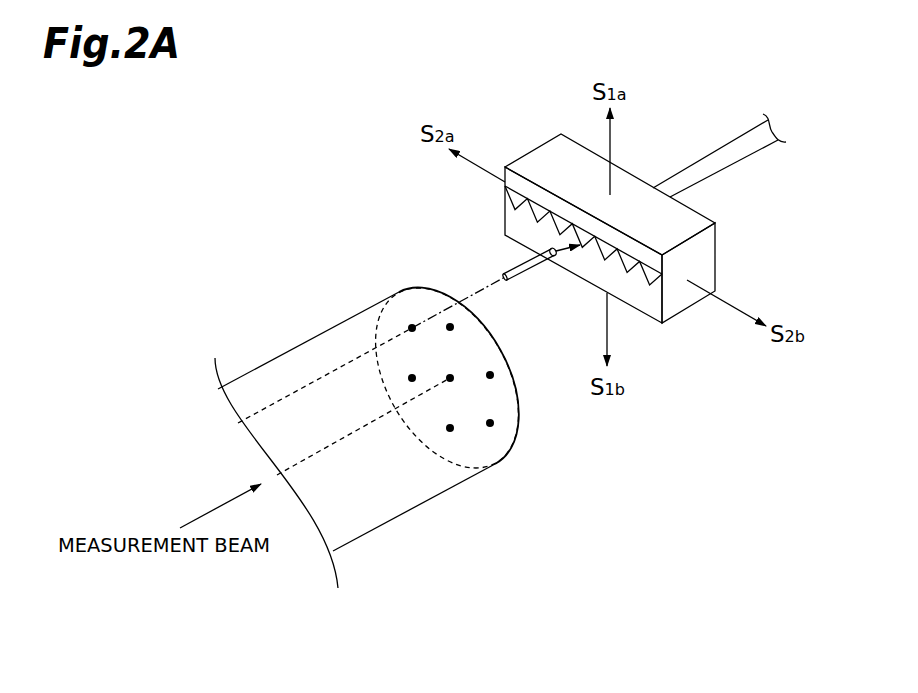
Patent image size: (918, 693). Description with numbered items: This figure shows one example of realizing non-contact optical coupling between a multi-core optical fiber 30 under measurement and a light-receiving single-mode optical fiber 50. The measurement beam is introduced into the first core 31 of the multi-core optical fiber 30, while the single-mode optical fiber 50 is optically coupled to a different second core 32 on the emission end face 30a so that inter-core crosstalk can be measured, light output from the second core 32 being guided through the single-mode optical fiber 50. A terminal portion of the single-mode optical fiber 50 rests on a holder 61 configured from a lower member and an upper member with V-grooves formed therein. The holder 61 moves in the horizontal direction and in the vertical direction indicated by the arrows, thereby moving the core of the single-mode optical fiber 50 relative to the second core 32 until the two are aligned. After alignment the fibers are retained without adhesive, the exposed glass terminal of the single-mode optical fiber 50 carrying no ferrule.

The multi-core optical fiber 30 is at (384, 299).
The emission end face 30a is at (517, 400).
The first core 31 is at (343, 440).
The second core 32 is at (343, 367).
The single-mode optical fiber 50 is at (740, 150).
The holder 61 is at (678, 300).